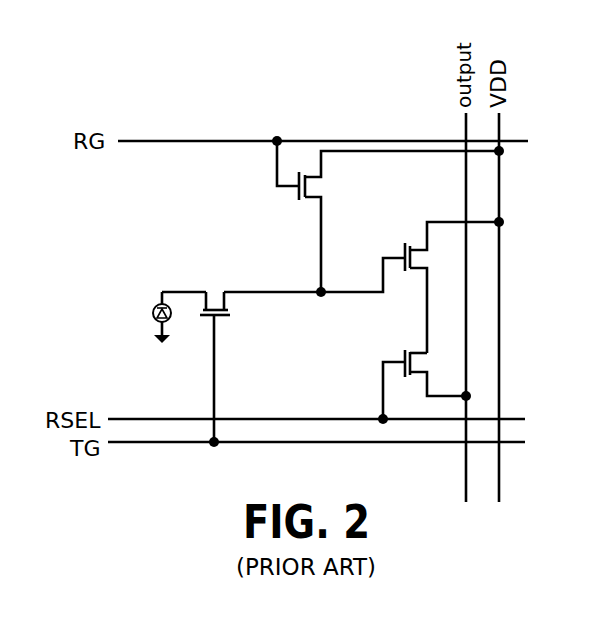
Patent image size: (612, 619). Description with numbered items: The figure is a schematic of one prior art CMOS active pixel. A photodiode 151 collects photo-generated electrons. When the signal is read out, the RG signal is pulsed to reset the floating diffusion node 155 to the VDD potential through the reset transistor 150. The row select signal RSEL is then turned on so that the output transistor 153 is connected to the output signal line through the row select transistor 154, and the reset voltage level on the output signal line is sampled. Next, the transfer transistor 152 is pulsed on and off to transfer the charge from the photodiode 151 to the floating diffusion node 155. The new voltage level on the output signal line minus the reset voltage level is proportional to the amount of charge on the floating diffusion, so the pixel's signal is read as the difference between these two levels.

The reset transistor 150 is at (322, 186).
The photodiode 151 is at (152, 315).
The transfer transistor 152 is at (229, 318).
The output transistor 153 is at (410, 278).
The row select transistor 154 is at (399, 366).
The floating diffusion node 155 is at (320, 290).